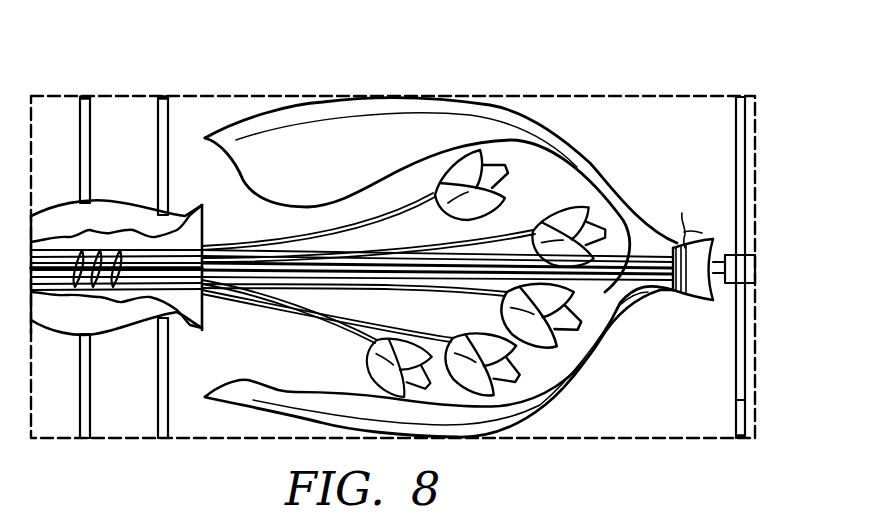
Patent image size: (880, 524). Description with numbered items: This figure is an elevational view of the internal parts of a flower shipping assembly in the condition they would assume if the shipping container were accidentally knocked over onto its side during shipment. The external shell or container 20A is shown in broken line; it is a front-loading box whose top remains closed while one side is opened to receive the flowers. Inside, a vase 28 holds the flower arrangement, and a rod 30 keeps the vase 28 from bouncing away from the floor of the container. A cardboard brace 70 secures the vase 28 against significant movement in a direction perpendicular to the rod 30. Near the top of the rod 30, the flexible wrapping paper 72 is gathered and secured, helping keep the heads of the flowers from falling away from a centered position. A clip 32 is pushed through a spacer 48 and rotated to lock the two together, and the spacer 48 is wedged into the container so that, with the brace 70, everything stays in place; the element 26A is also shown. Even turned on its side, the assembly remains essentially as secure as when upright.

The container 20A is at (613, 95).
The support post 26A is at (748, 132).
The vase 28 is at (115, 334).
The rod 30 is at (603, 290).
The clip 32 is at (752, 284).
The spacer 48 is at (735, 410).
The cardboard brace 70 is at (90, 128).
The flexible wrapping paper 72 is at (330, 128).